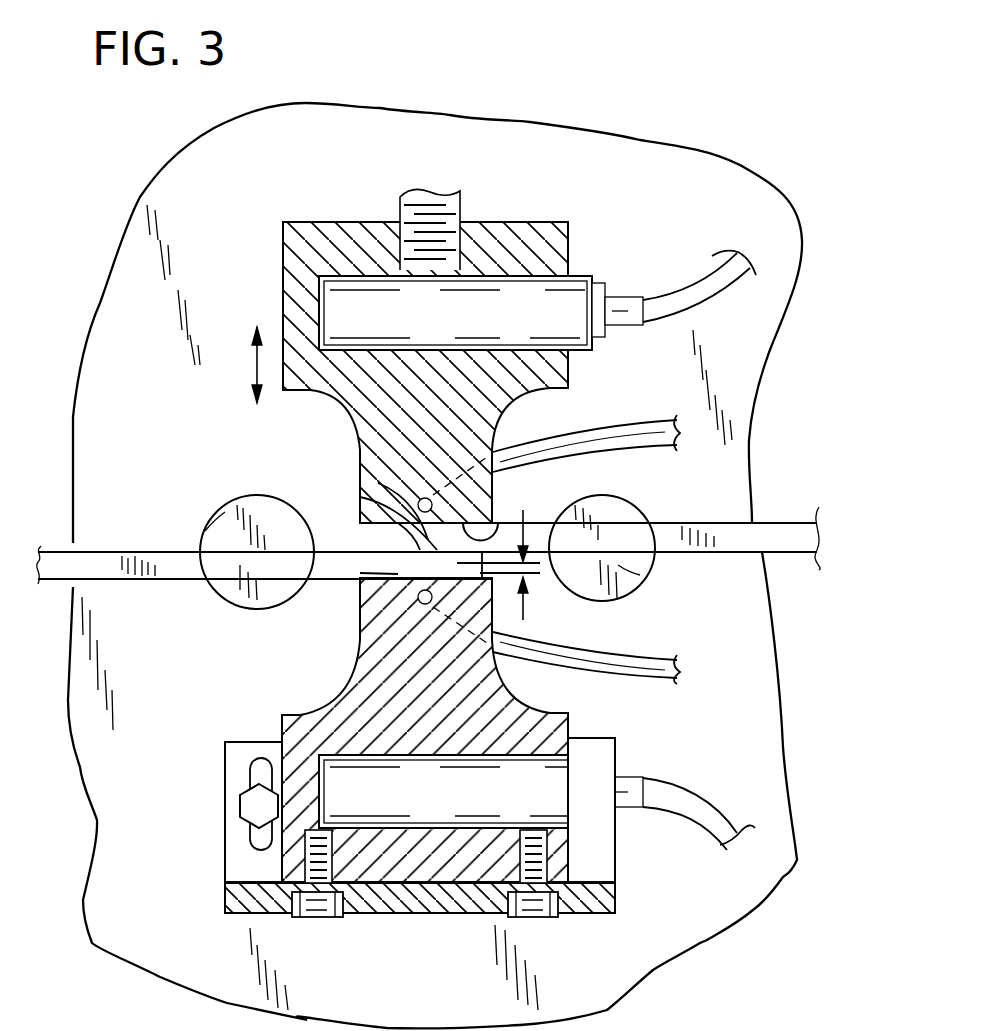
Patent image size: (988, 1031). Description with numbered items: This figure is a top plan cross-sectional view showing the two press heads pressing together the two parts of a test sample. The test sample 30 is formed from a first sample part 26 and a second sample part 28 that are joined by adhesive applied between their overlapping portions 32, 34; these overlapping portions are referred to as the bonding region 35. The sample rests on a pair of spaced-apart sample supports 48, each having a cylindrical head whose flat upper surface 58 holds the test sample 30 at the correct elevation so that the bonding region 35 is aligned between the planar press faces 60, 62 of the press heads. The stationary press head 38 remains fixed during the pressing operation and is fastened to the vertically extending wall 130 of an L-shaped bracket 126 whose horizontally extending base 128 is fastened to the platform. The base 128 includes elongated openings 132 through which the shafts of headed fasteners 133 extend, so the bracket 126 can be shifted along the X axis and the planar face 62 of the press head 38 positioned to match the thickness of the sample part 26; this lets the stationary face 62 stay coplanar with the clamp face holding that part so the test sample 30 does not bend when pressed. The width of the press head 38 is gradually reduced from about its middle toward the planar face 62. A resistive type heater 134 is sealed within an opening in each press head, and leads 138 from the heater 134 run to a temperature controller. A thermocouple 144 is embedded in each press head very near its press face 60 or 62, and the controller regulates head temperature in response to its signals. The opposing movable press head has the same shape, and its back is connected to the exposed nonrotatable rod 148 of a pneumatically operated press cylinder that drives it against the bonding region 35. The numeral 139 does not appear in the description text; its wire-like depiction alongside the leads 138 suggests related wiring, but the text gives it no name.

The sample part 26 is at (98, 553).
The sample part 28 is at (797, 550).
The test sample 30 is at (786, 500).
The overlapping portion 32 is at (367, 503).
The overlapping portion 34 is at (398, 532).
The bonding region 35 is at (377, 483).
The press head 38 is at (294, 401).
The sample support 48 is at (209, 492).
The flat upper surface 58 is at (223, 533).
The planar press face 60 is at (500, 523).
The planar press face 62 is at (360, 573).
The L-shaped bracket 126 is at (438, 936).
The base 128 is at (247, 743).
The vertically extending wall 130 is at (233, 897).
The elongated openings 132 is at (253, 768).
The headed fasteners 133 is at (253, 808).
The resistive type heater 134 is at (502, 328).
The leads 138 is at (693, 283).
The cable 139 is at (598, 428).
The thermocouple 144 is at (418, 498).
The nonrotatable rod 148 is at (470, 207).